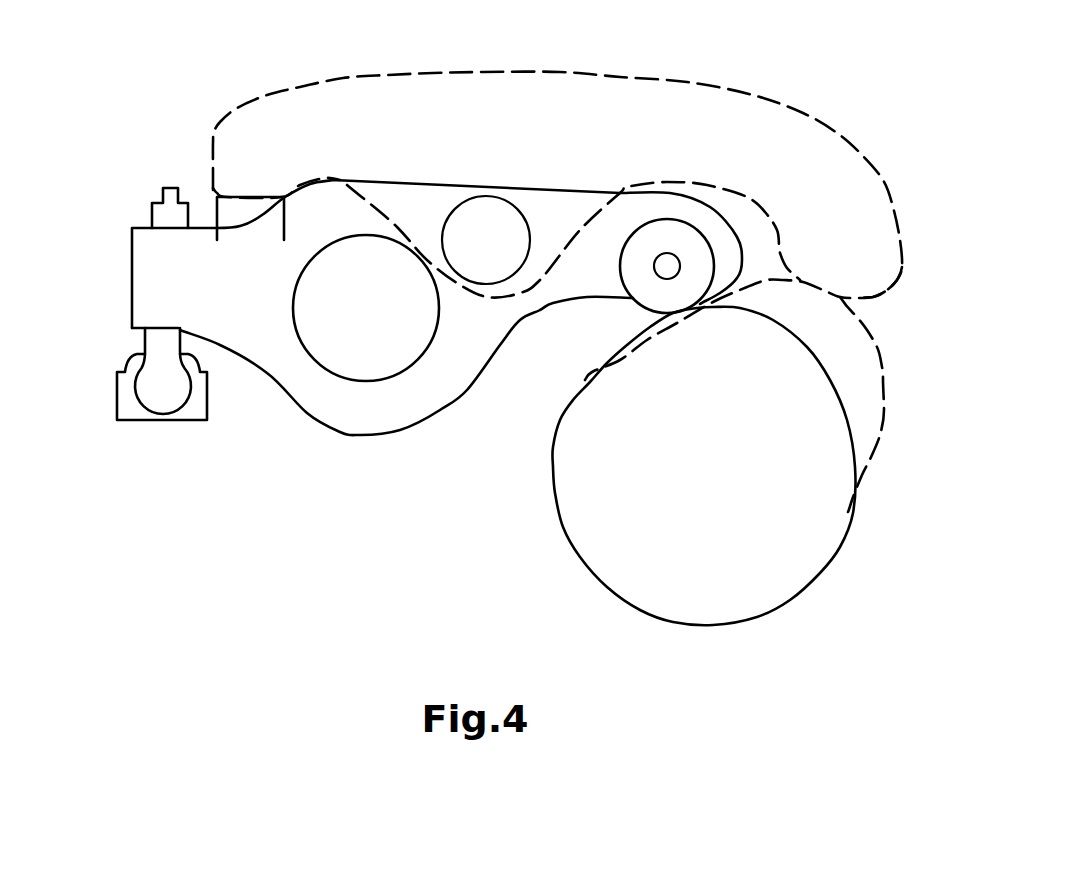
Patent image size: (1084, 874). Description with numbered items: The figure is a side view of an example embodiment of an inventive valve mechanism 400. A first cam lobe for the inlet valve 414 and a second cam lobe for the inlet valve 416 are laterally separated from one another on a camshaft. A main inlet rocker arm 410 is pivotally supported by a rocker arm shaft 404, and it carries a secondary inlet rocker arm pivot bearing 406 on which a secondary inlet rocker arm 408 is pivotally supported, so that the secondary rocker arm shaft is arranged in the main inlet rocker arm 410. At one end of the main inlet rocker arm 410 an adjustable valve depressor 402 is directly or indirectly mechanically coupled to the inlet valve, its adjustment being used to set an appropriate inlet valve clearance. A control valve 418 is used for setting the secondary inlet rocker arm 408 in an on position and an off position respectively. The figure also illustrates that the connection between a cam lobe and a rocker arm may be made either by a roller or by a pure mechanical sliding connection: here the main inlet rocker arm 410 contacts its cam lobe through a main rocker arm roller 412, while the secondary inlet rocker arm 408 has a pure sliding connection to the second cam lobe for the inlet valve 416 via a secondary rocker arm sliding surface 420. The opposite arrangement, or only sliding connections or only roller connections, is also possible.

The valve mechanism 400 is at (166, 31).
The adjustable valve depressor 402 is at (140, 382).
The rocker arm shaft 404 is at (338, 338).
The secondary inlet rocker arm pivot bearing 406 is at (487, 215).
The secondary inlet rocker arm 408 is at (643, 93).
The main inlet rocker arm 410 is at (460, 358).
The main rocker arm roller 412 is at (643, 295).
The first cam lobe for the inlet valve 414 is at (580, 500).
The second cam lobe for the inlet valve 416 is at (848, 350).
The control valve 418 is at (230, 210).
The secondary rocker arm sliding surface 420 is at (883, 292).